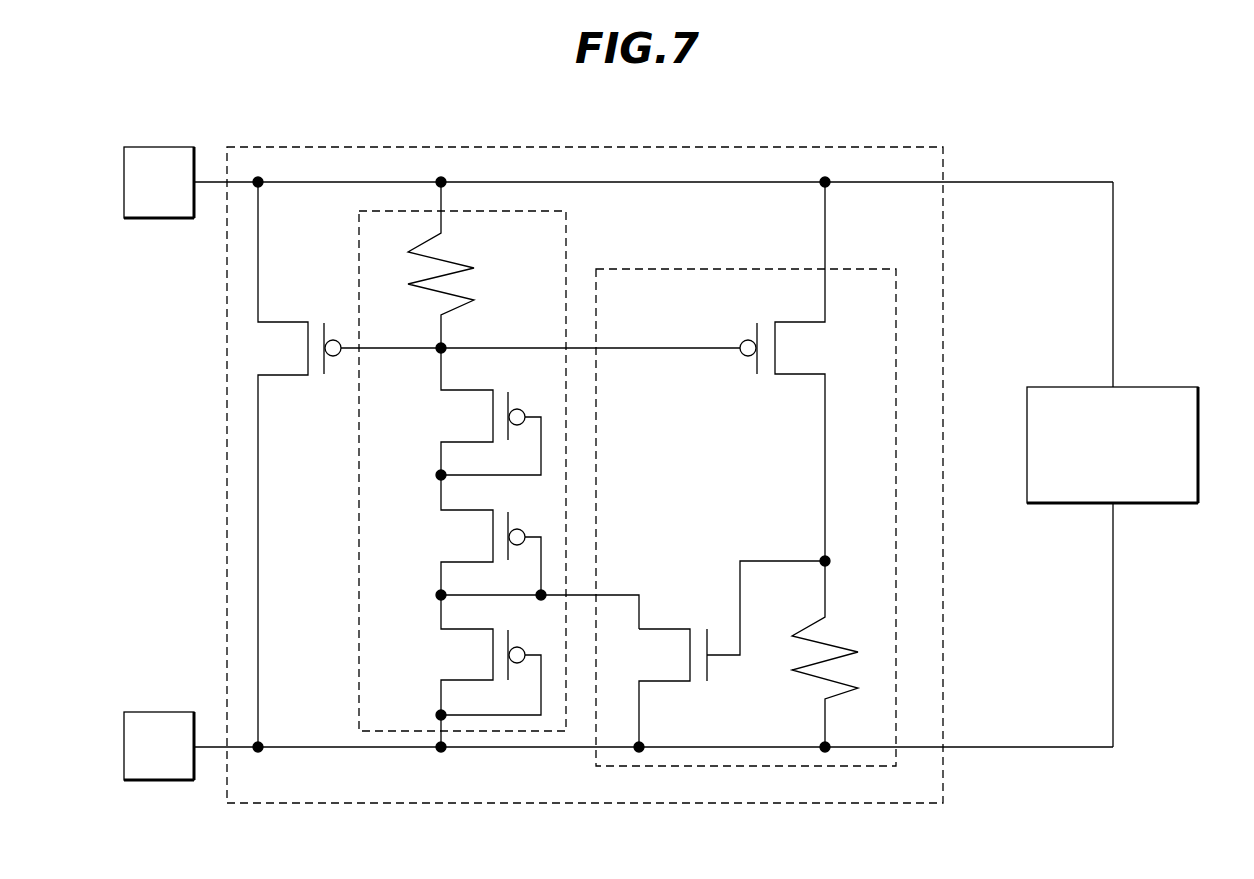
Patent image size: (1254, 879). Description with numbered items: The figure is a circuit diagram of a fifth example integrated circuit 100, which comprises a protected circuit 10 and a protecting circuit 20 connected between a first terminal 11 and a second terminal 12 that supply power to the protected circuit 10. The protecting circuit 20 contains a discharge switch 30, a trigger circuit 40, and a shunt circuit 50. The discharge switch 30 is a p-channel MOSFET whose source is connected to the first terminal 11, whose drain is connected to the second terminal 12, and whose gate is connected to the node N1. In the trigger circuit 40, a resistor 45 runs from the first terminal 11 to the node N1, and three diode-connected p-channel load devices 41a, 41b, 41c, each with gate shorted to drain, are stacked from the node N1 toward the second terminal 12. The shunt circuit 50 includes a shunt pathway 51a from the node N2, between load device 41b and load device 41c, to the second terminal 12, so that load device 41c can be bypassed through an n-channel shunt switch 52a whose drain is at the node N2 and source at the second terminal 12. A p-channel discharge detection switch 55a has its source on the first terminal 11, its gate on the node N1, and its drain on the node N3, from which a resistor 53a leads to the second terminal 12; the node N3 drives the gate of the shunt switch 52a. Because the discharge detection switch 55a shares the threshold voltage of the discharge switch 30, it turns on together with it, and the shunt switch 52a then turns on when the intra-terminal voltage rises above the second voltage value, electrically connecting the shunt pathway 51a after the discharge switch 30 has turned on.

The integrated circuit 100 is at (1037, 133).
The protected circuit 10 is at (1153, 387).
The first terminal 11 is at (166, 219).
The second terminal 12 is at (158, 712).
The protecting circuit 20 is at (945, 262).
The discharge switch 30 is at (282, 322).
The trigger circuit 40 is at (577, 254).
The load device 41a is at (470, 389).
The load device 41b is at (470, 510).
The load device 41c is at (470, 629).
The resistor 45 is at (412, 290).
The shunt circuit 50 is at (745, 268).
The shunt pathway 51a is at (614, 595).
The shunt switch 52a is at (669, 628).
The resistor 53a is at (790, 670).
The discharge detection switch 55a is at (793, 375).
The node N1 is at (437, 352).
The node N2 is at (437, 600).
The node N3 is at (830, 557).